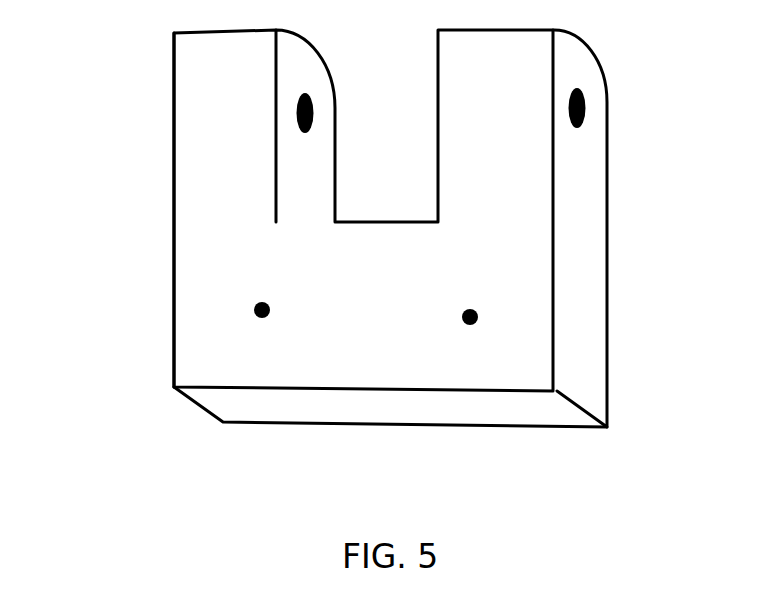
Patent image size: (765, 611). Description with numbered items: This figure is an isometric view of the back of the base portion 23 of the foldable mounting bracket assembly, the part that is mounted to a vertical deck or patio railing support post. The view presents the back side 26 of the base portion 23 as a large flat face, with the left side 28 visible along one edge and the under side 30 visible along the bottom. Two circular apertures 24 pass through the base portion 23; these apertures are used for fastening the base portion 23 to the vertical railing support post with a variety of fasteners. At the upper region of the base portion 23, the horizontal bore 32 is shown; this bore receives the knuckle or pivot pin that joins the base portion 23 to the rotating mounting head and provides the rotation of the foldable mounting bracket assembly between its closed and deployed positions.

The base portion 23 is at (222, 87).
The circular apertures 24 is at (268, 324).
The back side 26 is at (263, 255).
The left side 28 is at (588, 266).
The under side 30 is at (272, 412).
The horizontal bore 32 is at (323, 122).